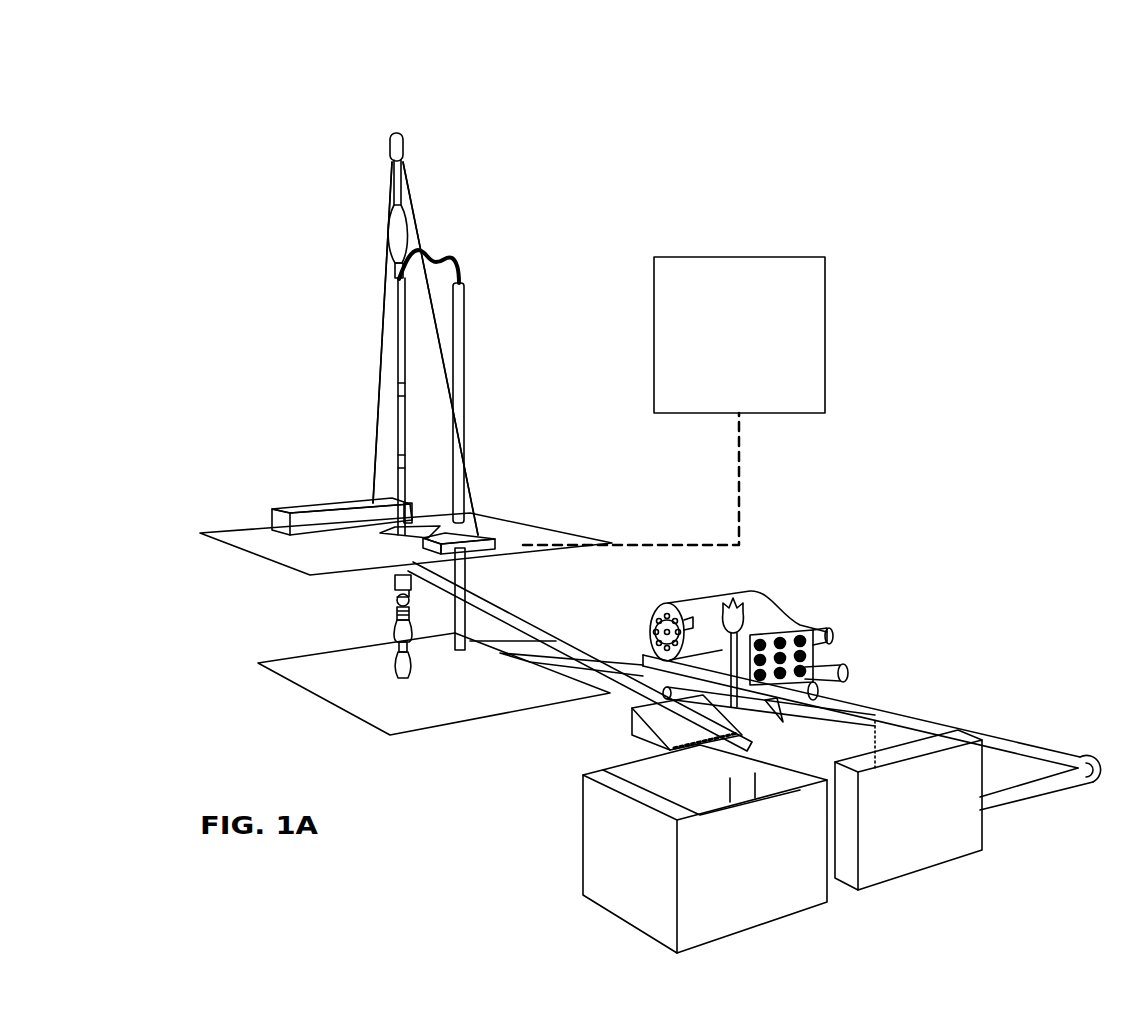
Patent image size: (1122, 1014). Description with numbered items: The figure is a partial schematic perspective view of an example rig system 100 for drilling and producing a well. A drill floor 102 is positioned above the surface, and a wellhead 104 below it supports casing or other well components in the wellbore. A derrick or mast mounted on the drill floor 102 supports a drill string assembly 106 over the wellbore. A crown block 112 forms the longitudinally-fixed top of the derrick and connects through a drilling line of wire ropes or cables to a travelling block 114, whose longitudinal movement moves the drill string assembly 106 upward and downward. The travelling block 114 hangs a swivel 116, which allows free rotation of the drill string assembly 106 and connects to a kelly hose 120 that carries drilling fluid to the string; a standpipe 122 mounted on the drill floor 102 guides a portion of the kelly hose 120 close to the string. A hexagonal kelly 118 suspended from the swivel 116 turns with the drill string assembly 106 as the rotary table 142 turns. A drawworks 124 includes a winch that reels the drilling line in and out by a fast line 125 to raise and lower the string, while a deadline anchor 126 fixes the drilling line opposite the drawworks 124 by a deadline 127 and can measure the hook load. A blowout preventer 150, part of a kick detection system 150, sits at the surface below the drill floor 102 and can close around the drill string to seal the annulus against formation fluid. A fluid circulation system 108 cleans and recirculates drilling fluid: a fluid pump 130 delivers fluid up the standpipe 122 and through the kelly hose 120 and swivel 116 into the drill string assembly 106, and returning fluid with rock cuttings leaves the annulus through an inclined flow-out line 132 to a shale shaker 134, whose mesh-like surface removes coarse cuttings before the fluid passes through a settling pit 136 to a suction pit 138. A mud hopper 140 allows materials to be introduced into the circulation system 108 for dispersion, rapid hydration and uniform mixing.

The rig system 100 is at (180, 118).
The drill floor 102 is at (250, 545).
The wellhead 104 is at (413, 680).
The drill string assembly 106 is at (464, 190).
The fluid circulation system 108 is at (946, 590).
The crown block 112 is at (388, 143).
The travelling block 114 is at (388, 218).
The swivel 116 is at (397, 282).
The kelly 118 is at (398, 312).
The kelly hose 120 is at (445, 258).
The standpipe 122 is at (468, 360).
The drawworks 124 is at (355, 503).
The fast line 125 is at (378, 378).
The deadline anchor 126 is at (505, 540).
The deadline 127 is at (440, 330).
The fluid pump 130 is at (785, 630).
The flow-out line 132 is at (535, 618).
The shale shaker 134 is at (660, 745).
The settling pit 136 is at (597, 856).
The suction pit 138 is at (978, 748).
The mud hopper 140 is at (740, 600).
The rotary table 142 is at (418, 508).
The kick detection system / blowout preventer 150 is at (833, 362).